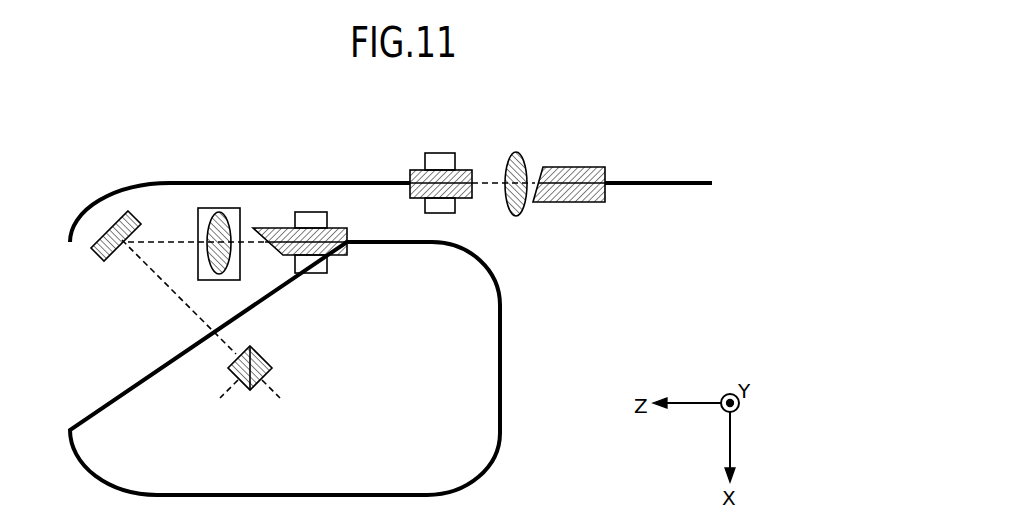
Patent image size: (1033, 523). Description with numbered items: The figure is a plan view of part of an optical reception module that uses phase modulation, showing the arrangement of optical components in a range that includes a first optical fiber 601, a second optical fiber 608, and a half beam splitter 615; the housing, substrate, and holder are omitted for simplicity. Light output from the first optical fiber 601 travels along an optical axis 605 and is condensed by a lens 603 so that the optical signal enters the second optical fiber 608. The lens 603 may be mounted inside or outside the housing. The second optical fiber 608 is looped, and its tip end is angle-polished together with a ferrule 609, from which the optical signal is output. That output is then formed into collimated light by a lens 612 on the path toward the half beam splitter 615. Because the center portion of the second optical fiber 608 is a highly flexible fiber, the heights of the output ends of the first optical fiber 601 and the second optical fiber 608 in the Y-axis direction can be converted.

The first optical fiber 601 is at (665, 186).
The lens 603 is at (517, 152).
The optical axis 605 is at (488, 183).
The second optical fiber 608 is at (263, 183).
The ferrule 609 is at (335, 256).
The lens 612 is at (222, 280).
The half beam splitter 615 is at (273, 368).